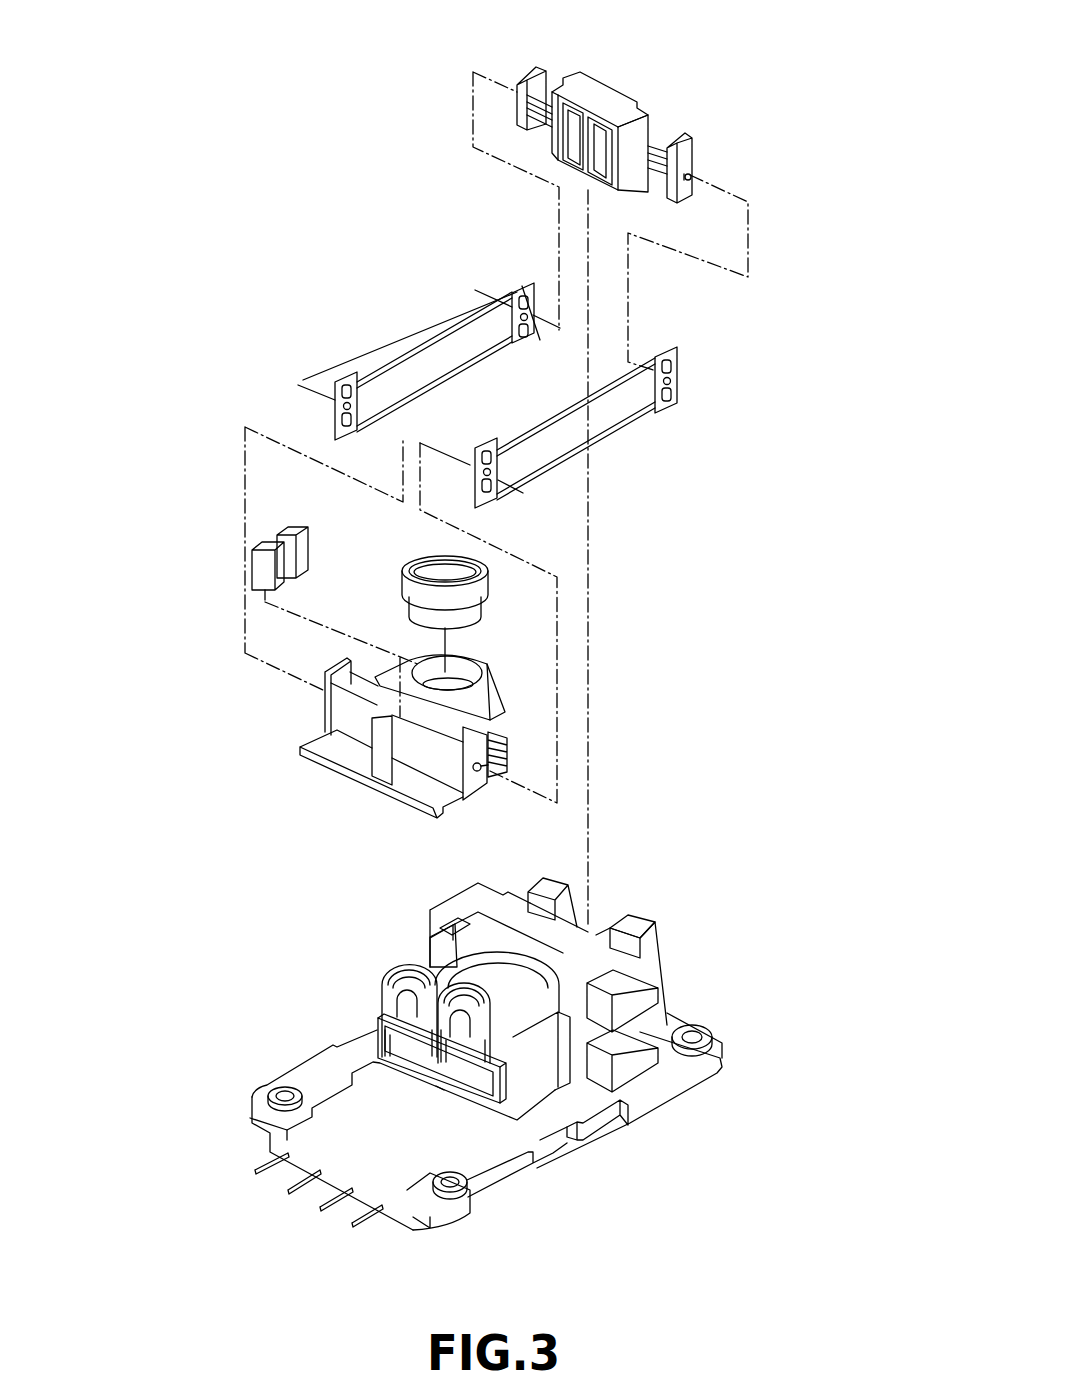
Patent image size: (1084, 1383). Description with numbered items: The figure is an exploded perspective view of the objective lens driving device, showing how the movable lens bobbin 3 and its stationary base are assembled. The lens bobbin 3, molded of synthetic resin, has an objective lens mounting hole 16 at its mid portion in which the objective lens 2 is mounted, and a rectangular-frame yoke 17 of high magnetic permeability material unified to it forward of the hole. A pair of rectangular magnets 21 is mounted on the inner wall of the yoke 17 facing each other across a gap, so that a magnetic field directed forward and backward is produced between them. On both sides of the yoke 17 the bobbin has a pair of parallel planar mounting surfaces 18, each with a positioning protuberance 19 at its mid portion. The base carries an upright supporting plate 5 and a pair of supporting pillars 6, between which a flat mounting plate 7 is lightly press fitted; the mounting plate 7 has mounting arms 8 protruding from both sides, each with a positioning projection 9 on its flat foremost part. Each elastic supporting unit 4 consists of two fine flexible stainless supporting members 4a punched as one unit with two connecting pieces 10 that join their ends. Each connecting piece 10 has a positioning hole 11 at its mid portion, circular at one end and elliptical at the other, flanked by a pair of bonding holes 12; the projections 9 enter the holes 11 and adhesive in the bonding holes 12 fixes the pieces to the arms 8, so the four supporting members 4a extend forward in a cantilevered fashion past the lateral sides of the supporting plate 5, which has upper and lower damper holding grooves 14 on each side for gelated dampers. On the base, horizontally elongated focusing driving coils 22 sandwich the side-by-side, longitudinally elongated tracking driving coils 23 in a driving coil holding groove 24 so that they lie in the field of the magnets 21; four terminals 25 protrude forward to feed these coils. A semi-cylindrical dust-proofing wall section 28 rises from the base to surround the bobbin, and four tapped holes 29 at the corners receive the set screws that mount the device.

The objective lens 2 is at (415, 562).
The lens bobbin 3 is at (488, 660).
The elastic supporting unit 4 is at (383, 300).
The supporting member 4a is at (430, 345).
The supporting plate 5 is at (480, 895).
The supporting pillar 6 is at (552, 880).
The mounting plate 7 is at (612, 95).
The mounting arm 8 is at (525, 72).
The positioning projection 9 is at (695, 176).
The connecting piece 10 is at (525, 285).
The positioning hole 11 is at (520, 320).
The bonding hole 12 is at (520, 298).
The damper holding groove 14 is at (440, 930).
The objective lens mounting hole 16 is at (413, 690).
The yoke 17 is at (500, 710).
The mounting surface 18 is at (322, 712).
The positioning protuberance 19 is at (510, 752).
The magnet 21 is at (262, 548).
The focusing driving coil 22 is at (378, 1035).
The tracking driving coil 23 is at (440, 960).
The driving coil holding groove 24 is at (438, 1092).
The terminal 25 is at (262, 1175).
The dust-proofing wall section 28 is at (450, 930).
The tapped hole 29 is at (272, 1092).